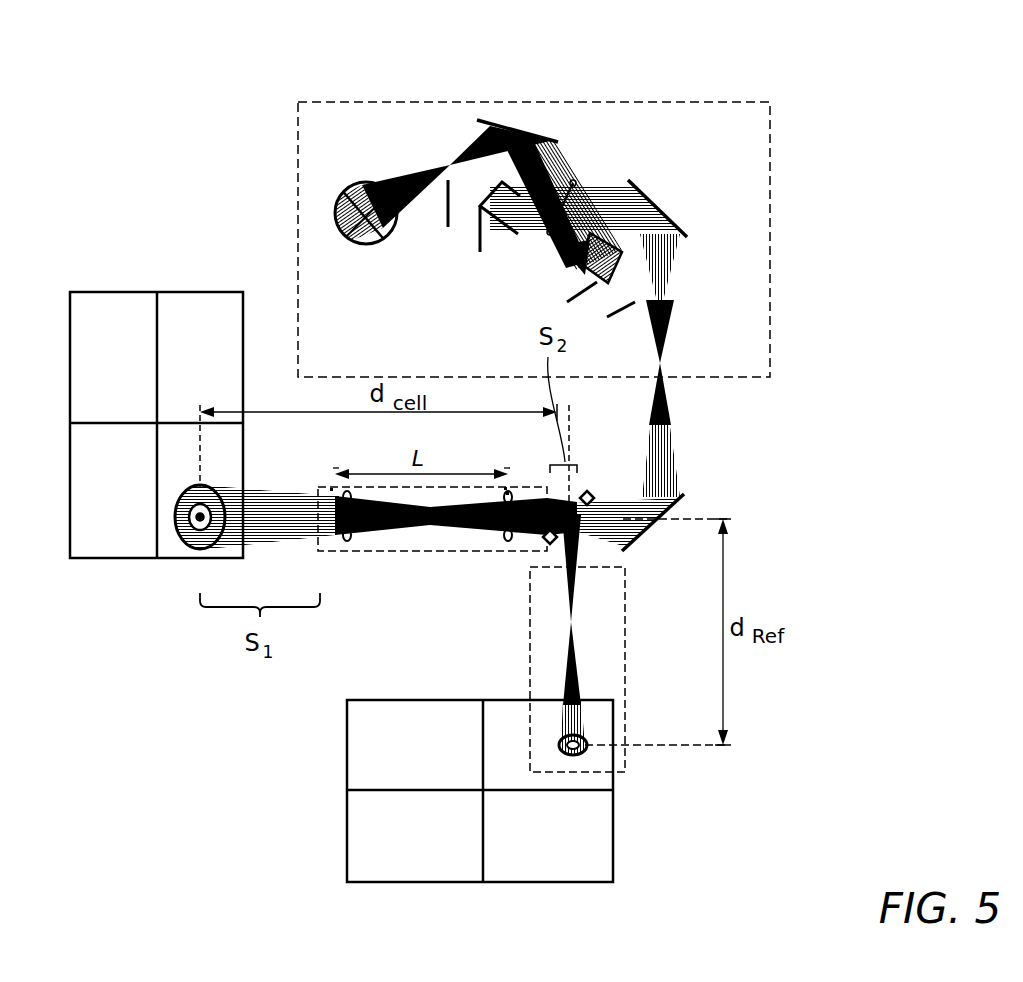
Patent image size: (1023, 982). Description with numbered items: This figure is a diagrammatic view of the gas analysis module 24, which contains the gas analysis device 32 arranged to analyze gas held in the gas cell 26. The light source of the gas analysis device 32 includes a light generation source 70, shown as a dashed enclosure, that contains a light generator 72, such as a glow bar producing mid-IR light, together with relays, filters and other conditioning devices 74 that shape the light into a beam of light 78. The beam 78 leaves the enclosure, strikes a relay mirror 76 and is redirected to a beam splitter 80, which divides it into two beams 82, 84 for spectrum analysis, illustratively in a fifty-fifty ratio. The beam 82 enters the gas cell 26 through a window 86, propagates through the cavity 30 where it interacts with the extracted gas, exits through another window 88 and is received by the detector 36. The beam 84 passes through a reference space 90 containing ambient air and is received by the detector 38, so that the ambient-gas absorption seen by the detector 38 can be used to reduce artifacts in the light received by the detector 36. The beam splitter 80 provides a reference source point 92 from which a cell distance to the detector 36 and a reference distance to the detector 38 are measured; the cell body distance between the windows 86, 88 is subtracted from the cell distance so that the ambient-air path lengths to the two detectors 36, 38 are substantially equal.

The gas analysis module 24 is at (922, 76).
The gas cell 26 is at (348, 556).
The cavity 30 is at (380, 545).
The gas analysis device 32 is at (689, 72).
The detector 36 is at (199, 485).
The detector 38 is at (578, 752).
The light generation source 70 is at (773, 127).
The light generator 72 is at (359, 183).
The conditioning devices 74 is at (675, 155).
The relay mirror 76 is at (683, 506).
The beam of light 78 is at (685, 415).
The beam splitter 80 is at (596, 482).
The beam 82 is at (521, 543).
The beam 84 is at (590, 586).
The window 86 is at (509, 491).
The window 88 is at (345, 491).
The reference space 90 is at (640, 644).
The reference source point 92 is at (569, 496).